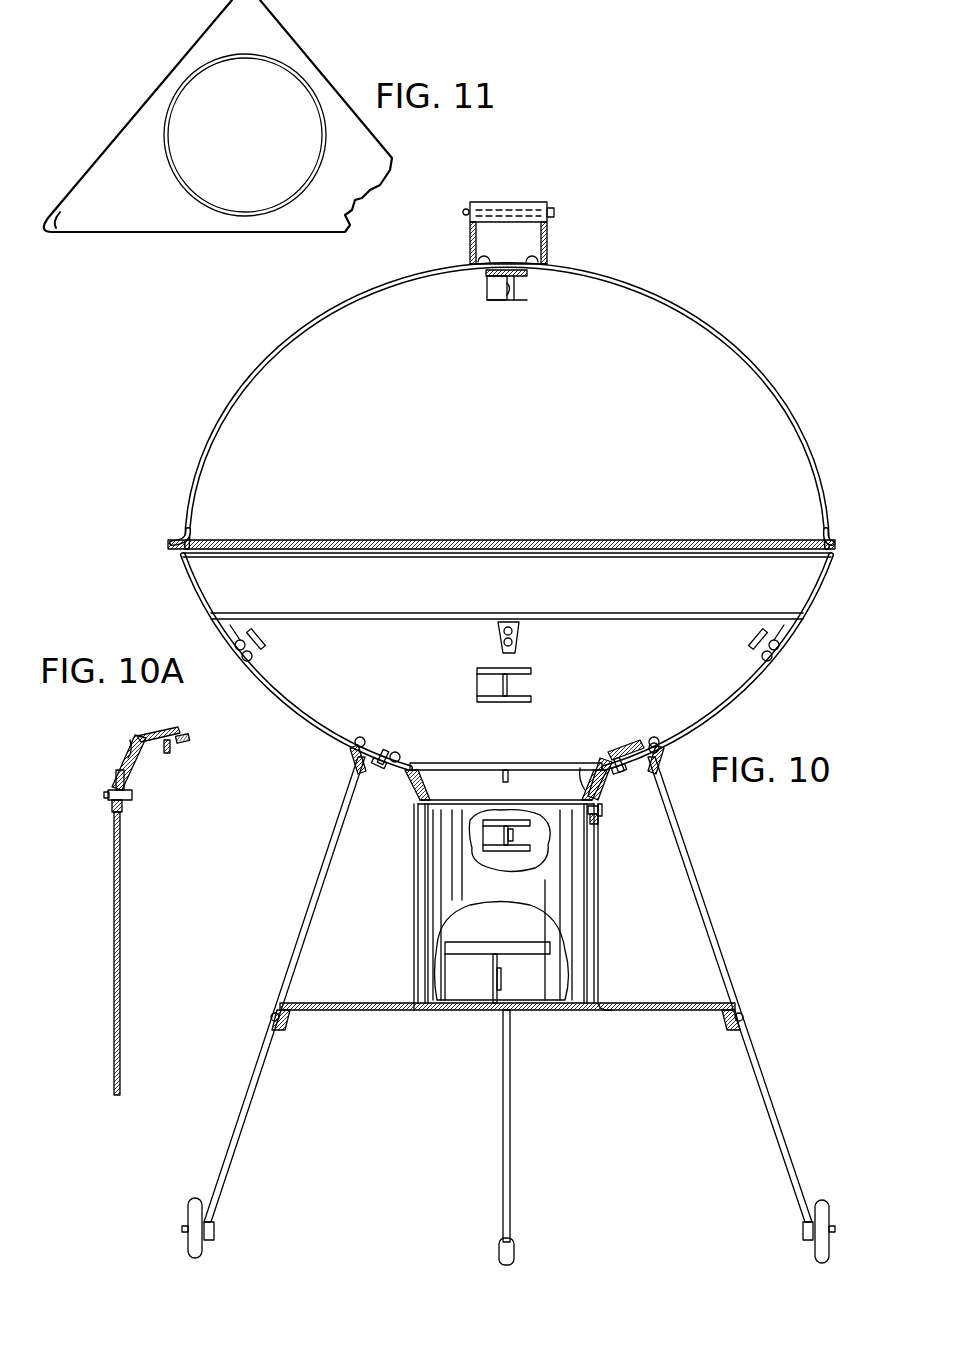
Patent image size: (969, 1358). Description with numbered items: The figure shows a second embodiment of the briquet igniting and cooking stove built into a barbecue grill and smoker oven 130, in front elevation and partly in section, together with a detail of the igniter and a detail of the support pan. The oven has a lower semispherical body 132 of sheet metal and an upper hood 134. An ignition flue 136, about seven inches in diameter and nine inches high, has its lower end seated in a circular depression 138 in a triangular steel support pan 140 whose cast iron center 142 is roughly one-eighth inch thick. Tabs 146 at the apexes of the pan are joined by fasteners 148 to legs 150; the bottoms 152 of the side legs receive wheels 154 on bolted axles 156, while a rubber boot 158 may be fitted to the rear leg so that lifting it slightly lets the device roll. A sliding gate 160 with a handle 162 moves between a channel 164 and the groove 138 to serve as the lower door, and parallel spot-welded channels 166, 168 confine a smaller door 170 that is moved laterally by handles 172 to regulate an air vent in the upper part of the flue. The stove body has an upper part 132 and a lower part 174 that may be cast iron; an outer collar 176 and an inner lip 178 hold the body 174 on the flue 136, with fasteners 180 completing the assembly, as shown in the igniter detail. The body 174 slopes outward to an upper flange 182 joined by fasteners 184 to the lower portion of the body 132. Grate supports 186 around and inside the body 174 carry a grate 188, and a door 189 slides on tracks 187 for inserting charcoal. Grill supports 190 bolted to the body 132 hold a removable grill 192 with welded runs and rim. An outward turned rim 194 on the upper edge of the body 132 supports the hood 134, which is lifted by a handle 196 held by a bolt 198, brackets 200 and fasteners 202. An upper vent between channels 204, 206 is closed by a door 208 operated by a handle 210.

In FIG. 10, the barbecue grill and smoker oven 130 is at (522, 516).
In FIG. 10, the lower semispherical body 132 is at (765, 660).
In FIG. 10, the upper hood 134 is at (800, 442).
In FIG. 10A, the ignition flue 136 is at (121, 905).
In FIG. 10, the ignition flue 136 is at (598, 920).
In FIG. 11, the circular depression 138 is at (265, 55).
In FIG. 10, the circular depression 138 is at (612, 1005).
In FIG. 11, the triangular steel support pan 140 is at (165, 85).
In FIG. 10, the triangular steel support pan 140 is at (365, 1010).
In FIG. 11, the cast iron center 142 is at (290, 85).
In FIG. 10, the cast iron center 142 is at (475, 1010).
In FIG. 11, the tabs 146 is at (52, 200).
In FIG. 10, the tabs 146 is at (725, 1032).
In FIG. 10, the fasteners 148 is at (268, 1016).
In FIG. 10, the legs 150 is at (720, 915).
In FIG. 10, the bottoms of side legs 152 is at (212, 1240).
In FIG. 10, the wheels 154 is at (190, 1252).
In FIG. 10, the bolted axles 156 is at (213, 1225).
In FIG. 10, the rubber boot 158 is at (511, 1236).
In FIG. 10, the sliding gate 160 is at (455, 982).
In FIG. 10, the handle 162 is at (502, 982).
In FIG. 10, the channel 164 is at (508, 942).
In FIG. 10, the spot-welded channel 166 is at (505, 852).
In FIG. 10, the spot-welded channel 168 is at (516, 820).
In FIG. 10, the door 170 is at (495, 836).
In FIG. 10, the handles 172 is at (513, 838).
In FIG. 10A, the lower part of stove body 174 is at (138, 752).
In FIG. 10, the lower part of stove body 174 is at (415, 786).
In FIG. 10A, the outer collar 176 is at (124, 806).
In FIG. 10, the outer collar 176 is at (598, 820).
In FIG. 10A, the inner lip 178 is at (118, 786).
In FIG. 10, the inner lip 178 is at (578, 768).
In FIG. 10A, the fasteners 180 is at (135, 796).
In FIG. 10, the fasteners 180 is at (598, 812).
In FIG. 10A, the upper flange 182 is at (140, 732).
In FIG. 10, the upper flange 182 is at (610, 752).
In FIG. 10A, the fasteners 184 is at (167, 732).
In FIG. 10, the fasteners 184 is at (620, 752).
In FIG. 10A, the grate supports 186 is at (125, 740).
In FIG. 10, the grate supports 186 is at (505, 768).
In FIG. 10, the tracks 187 is at (482, 702).
In FIG. 10, the grate 188 is at (440, 764).
In FIG. 10, the door 189 is at (480, 680).
In FIG. 10, the grill supports 190 is at (516, 636).
In FIG. 10, the removable grill 192 is at (614, 612).
In FIG. 10, the outward turned rim 194 is at (838, 540).
In FIG. 10, the handle 196 is at (500, 205).
In FIG. 10, the bolt 198 is at (556, 212).
In FIG. 10, the brackets 200 is at (470, 240).
In FIG. 10, the fasteners 202 is at (475, 258).
In FIG. 10, the channel 204 is at (518, 302).
In FIG. 10, the channel 206 is at (530, 272).
In FIG. 10, the door 208 is at (487, 290).
In FIG. 10, the handle 210 is at (508, 300).